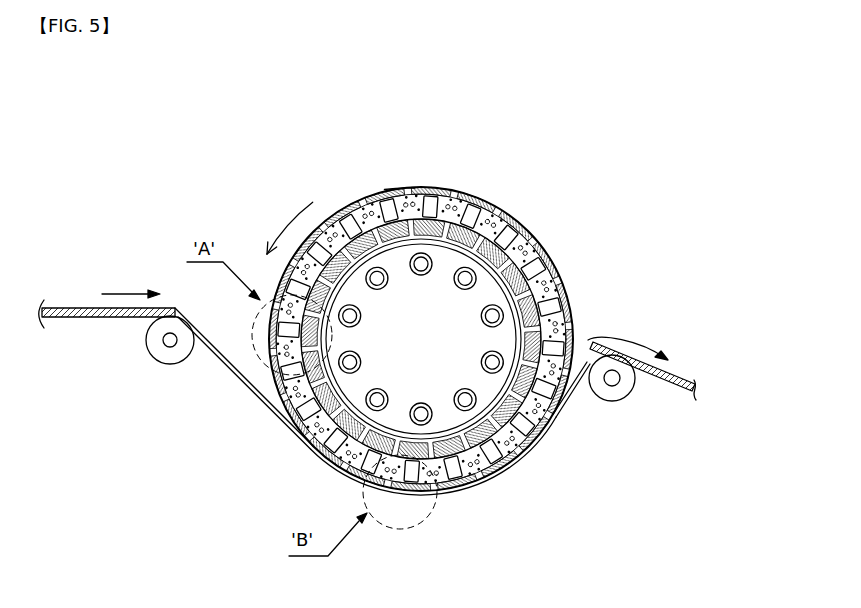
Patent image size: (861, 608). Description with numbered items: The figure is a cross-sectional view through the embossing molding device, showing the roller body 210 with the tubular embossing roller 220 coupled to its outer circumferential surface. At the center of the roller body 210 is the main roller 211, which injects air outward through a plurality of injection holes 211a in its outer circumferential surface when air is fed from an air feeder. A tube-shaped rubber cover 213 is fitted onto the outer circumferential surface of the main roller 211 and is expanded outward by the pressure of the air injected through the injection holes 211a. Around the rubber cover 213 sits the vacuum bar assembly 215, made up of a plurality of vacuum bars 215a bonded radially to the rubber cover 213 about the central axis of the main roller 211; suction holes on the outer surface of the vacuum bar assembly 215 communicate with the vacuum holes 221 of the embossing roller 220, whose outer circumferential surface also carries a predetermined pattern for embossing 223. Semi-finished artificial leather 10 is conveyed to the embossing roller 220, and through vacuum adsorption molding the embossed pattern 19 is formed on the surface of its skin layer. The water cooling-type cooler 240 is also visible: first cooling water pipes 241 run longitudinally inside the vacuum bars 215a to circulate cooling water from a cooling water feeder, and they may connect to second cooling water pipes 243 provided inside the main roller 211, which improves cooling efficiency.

The artificial leather 10 is at (85, 308).
The embossed pattern 19 is at (686, 398).
The roller body 210 is at (640, 243).
The main roller 211 is at (448, 345).
The injection holes 211a is at (551, 216).
The rubber cover 213 is at (452, 315).
The vacuum bar assembly 215 is at (464, 339).
The vacuum bars 215a is at (491, 191).
The embossing roller 220 is at (580, 383).
The vacuum holes 221 is at (556, 460).
The pattern for embossing 223 is at (489, 481).
The water cooling-type cooler 240 is at (388, 117).
The first cooling water pipes 241 is at (399, 188).
The second cooling water pipes 243 is at (335, 200).